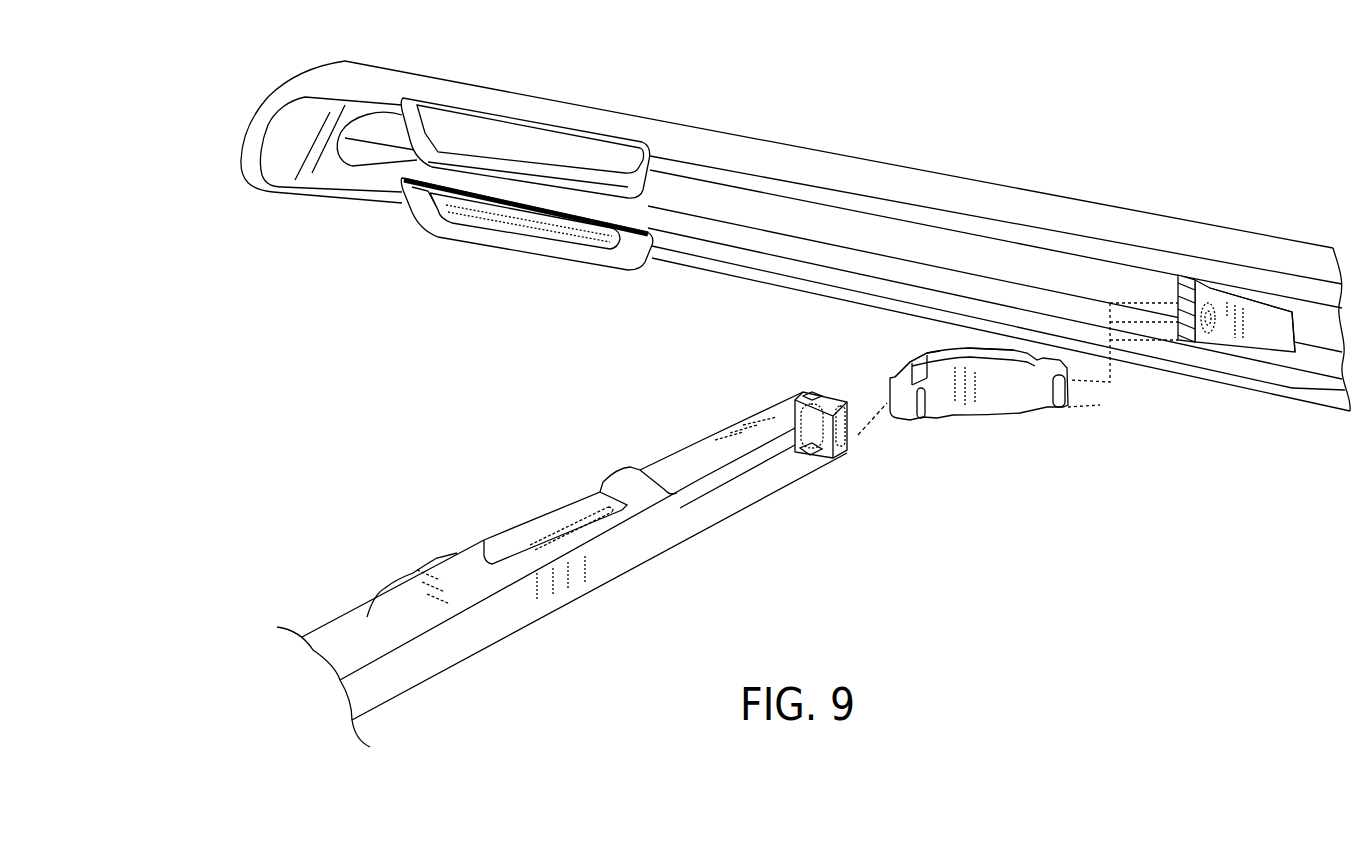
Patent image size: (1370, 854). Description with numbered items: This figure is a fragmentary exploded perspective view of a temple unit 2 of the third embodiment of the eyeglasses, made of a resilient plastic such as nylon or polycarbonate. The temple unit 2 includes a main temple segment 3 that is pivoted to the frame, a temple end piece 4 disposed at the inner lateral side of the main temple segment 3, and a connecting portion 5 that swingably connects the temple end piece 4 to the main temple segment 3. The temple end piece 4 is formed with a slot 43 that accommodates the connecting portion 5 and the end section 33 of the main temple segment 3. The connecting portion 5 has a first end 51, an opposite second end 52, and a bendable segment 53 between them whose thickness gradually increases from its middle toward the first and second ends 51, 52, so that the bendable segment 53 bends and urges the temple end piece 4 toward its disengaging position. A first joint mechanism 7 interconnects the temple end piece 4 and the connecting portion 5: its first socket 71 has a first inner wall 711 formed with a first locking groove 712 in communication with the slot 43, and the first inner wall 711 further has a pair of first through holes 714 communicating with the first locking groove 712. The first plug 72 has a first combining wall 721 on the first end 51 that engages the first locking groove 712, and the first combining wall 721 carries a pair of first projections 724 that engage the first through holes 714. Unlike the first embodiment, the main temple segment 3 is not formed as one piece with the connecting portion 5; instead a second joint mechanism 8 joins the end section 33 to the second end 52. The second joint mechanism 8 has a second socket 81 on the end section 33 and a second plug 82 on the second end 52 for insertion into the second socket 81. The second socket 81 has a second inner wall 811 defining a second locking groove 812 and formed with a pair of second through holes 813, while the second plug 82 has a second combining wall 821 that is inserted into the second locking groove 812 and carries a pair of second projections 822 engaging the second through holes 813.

The temple unit 2 is at (1068, 142).
The main temple segment 3 is at (467, 637).
The end section 33 is at (767, 473).
The temple end piece 4 is at (829, 147).
The slot 43 is at (708, 205).
The connecting portion 5 is at (992, 470).
The first end 51 is at (1010, 398).
The second end 52 is at (932, 405).
The bendable segment 53 is at (977, 402).
The first joint mechanism 7 is at (1183, 441).
The first socket 71 is at (1253, 399).
The first inner wall 711 is at (1200, 332).
The first locking groove 712 is at (1180, 322).
The first through holes 714 is at (1215, 328).
The first plug 72 is at (1107, 413).
The first combining wall 721 is at (1068, 400).
The first projections 724 is at (1037, 392).
The second joint mechanism 8 is at (844, 457).
The second socket 81 is at (734, 374).
The second inner wall 811 is at (830, 392).
The second locking groove 812 is at (759, 421).
The second through holes 813 is at (812, 392).
The second plug 82 is at (949, 458).
The second combining wall 821 is at (900, 420).
The second projections 822 is at (970, 518).